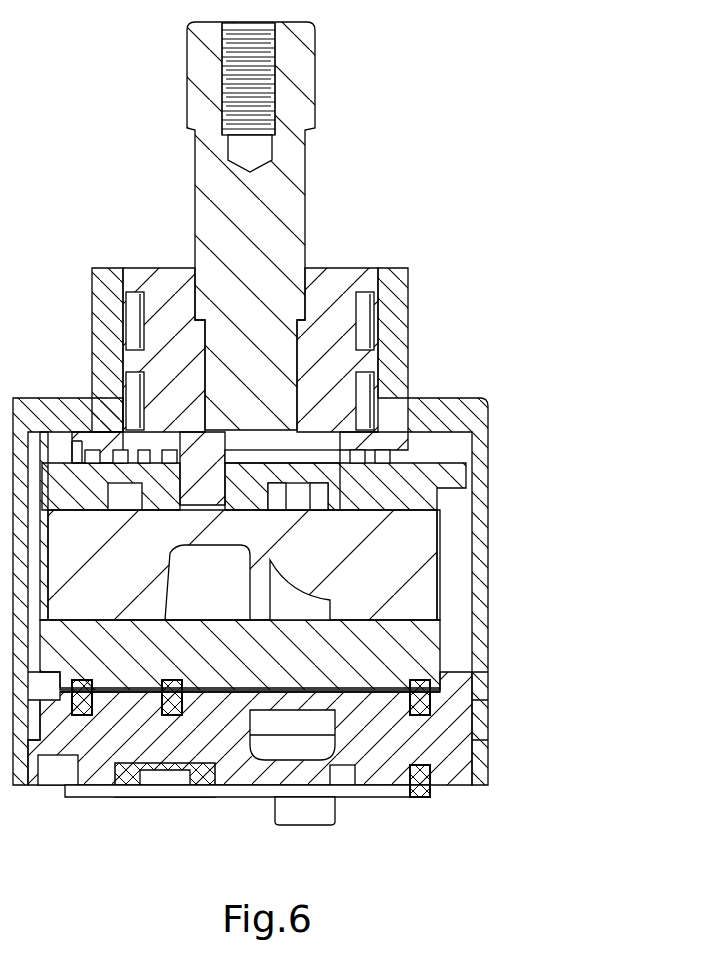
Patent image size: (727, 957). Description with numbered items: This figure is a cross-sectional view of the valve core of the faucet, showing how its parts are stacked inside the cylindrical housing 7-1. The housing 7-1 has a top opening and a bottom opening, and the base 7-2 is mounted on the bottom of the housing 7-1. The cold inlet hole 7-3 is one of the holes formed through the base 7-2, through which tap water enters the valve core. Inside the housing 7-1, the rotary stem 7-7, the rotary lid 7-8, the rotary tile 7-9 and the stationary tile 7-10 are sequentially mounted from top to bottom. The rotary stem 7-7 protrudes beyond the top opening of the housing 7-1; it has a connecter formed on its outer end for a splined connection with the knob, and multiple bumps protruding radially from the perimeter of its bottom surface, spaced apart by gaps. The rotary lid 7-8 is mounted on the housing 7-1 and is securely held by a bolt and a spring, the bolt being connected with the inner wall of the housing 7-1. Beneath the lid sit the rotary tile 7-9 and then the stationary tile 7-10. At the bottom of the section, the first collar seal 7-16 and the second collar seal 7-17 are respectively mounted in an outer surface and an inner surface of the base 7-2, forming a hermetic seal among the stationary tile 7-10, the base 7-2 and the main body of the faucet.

The housing 7-1 is at (392, 296).
The base 7-2 is at (428, 750).
The cold inlet hole 7-3 is at (250, 526).
The rotary stem 7-7 is at (302, 258).
The rotary lid 7-8 is at (428, 495).
The rotary tile 7-9 is at (400, 577).
The stationary tile 7-10 is at (402, 658).
The first collar seal 7-16 is at (432, 697).
The second collar seal 7-17 is at (432, 792).